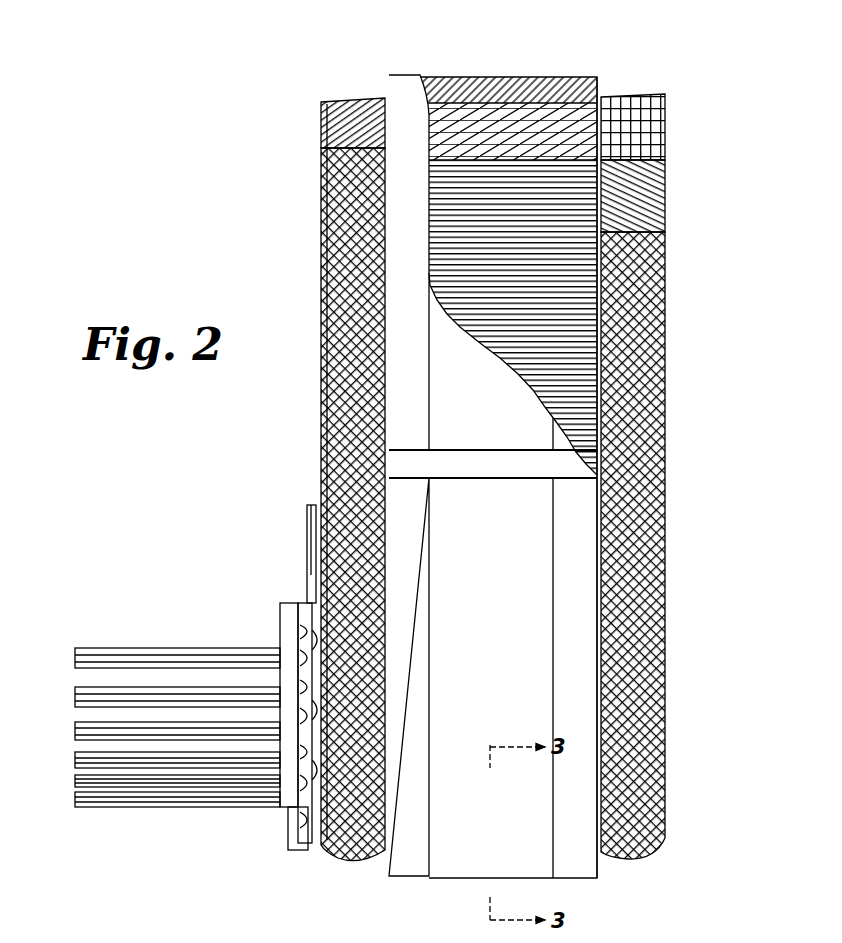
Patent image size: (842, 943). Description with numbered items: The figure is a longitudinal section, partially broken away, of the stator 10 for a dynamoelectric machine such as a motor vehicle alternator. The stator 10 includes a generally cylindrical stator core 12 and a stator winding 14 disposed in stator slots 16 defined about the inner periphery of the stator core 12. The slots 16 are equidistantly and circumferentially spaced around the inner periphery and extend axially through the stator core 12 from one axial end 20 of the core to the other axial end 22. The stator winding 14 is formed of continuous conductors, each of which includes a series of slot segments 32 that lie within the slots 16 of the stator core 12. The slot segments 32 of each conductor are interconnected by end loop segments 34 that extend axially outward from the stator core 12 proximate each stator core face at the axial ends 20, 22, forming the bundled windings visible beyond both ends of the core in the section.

The stator 10 is at (262, 138).
The stator core 12 is at (588, 77).
The stator winding 14 is at (667, 202).
The stator slots 16 is at (597, 263).
The axial end 20 is at (370, 507).
The axial end 22 is at (613, 530).
The slot segments 32 is at (587, 335).
The end loop segments 34 is at (320, 212).